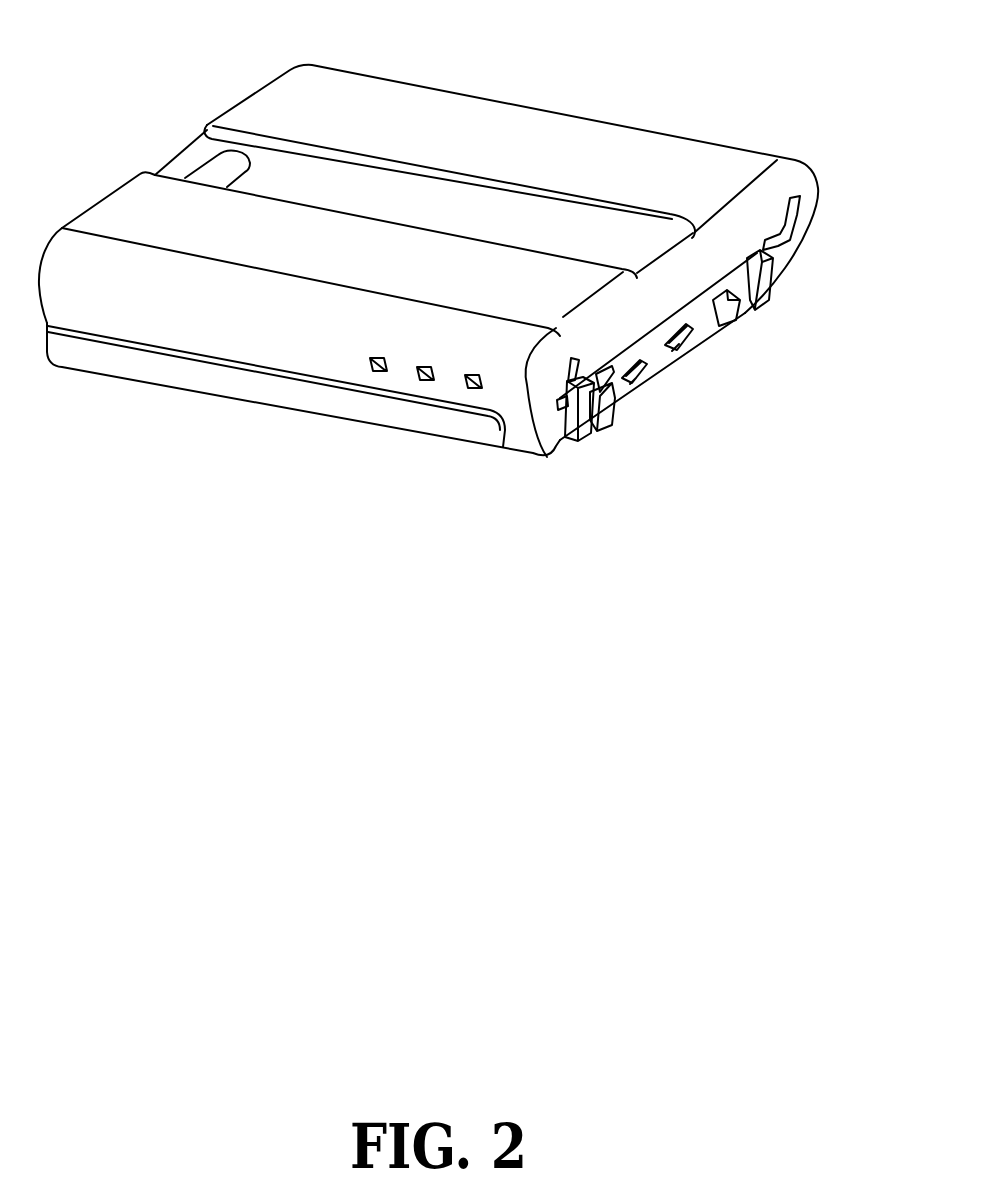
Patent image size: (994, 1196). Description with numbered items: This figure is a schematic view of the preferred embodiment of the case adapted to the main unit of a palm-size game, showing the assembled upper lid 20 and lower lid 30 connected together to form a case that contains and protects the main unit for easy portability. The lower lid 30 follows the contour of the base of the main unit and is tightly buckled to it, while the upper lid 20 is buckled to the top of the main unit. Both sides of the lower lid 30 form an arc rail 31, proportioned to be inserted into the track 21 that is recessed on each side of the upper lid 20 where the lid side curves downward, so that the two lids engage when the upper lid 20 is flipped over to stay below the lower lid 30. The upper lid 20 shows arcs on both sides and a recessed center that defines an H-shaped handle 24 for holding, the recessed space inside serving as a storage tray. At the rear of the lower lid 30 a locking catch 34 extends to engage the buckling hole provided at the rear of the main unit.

The upper lid 20 is at (517, 113).
The track 21 is at (787, 225).
The H-shaped handle 24 is at (158, 135).
The lower lid 30 is at (282, 440).
The arc rail 31 is at (178, 380).
The locking catch 34 is at (603, 413).